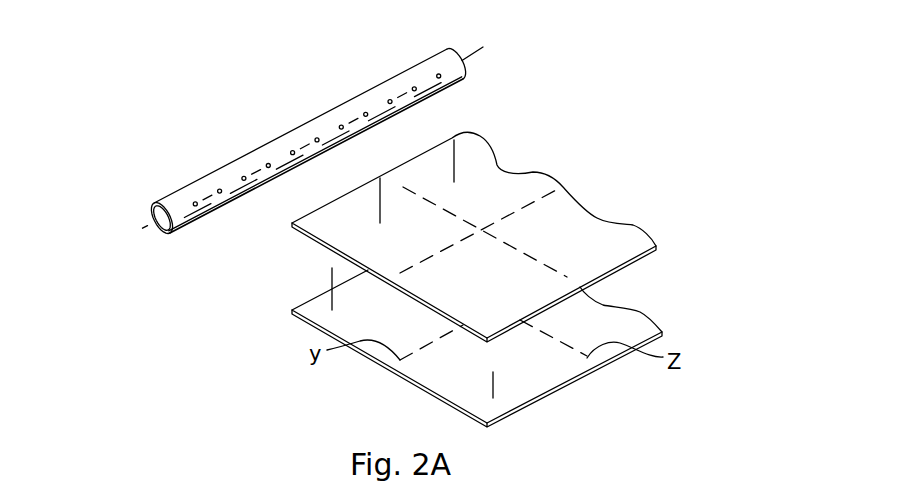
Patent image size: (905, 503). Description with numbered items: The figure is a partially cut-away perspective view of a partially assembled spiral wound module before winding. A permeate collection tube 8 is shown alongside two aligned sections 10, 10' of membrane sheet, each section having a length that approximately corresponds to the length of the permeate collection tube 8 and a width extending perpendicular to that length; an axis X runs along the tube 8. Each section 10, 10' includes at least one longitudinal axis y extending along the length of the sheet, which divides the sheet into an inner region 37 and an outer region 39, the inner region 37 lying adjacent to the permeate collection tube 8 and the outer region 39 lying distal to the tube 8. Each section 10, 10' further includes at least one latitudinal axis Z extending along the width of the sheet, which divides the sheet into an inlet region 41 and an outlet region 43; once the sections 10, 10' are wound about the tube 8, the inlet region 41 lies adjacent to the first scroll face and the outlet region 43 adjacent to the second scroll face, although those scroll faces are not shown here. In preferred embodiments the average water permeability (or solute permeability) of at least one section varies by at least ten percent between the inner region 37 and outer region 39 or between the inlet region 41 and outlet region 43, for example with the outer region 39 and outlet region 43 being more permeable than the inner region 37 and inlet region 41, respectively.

The permeate collection tube 8 is at (360, 95).
The section of membrane sheet 10 is at (495, 237).
The section of membrane sheet 10' is at (501, 348).
The inner region 37 is at (332, 275).
The outer region 39 is at (494, 372).
The inlet region 41 is at (380, 190).
The outlet region 43 is at (452, 138).
The X axis X is at (478, 43).
The longitudinal axis y is at (538, 198).
The latitudinal axis Z is at (567, 280).